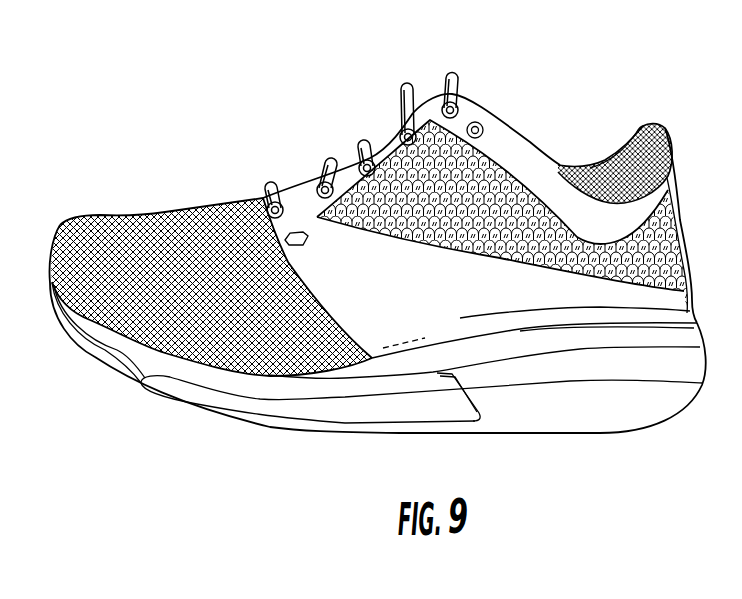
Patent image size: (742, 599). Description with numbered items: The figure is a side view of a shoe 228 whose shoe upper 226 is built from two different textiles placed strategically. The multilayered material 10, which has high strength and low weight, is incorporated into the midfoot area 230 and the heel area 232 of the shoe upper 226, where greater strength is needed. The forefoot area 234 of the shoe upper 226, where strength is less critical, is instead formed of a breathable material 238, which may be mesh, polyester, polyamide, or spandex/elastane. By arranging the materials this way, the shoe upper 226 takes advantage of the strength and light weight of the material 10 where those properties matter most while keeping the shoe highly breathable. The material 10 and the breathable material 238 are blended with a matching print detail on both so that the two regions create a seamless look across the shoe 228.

The material 10 is at (550, 308).
The shoe upper 226 is at (352, 305).
The shoe 228 is at (530, 187).
The midfoot area 230 is at (432, 330).
The heel area 232 is at (677, 267).
The forefoot area 234 is at (183, 235).
The breathable material 238 is at (152, 308).